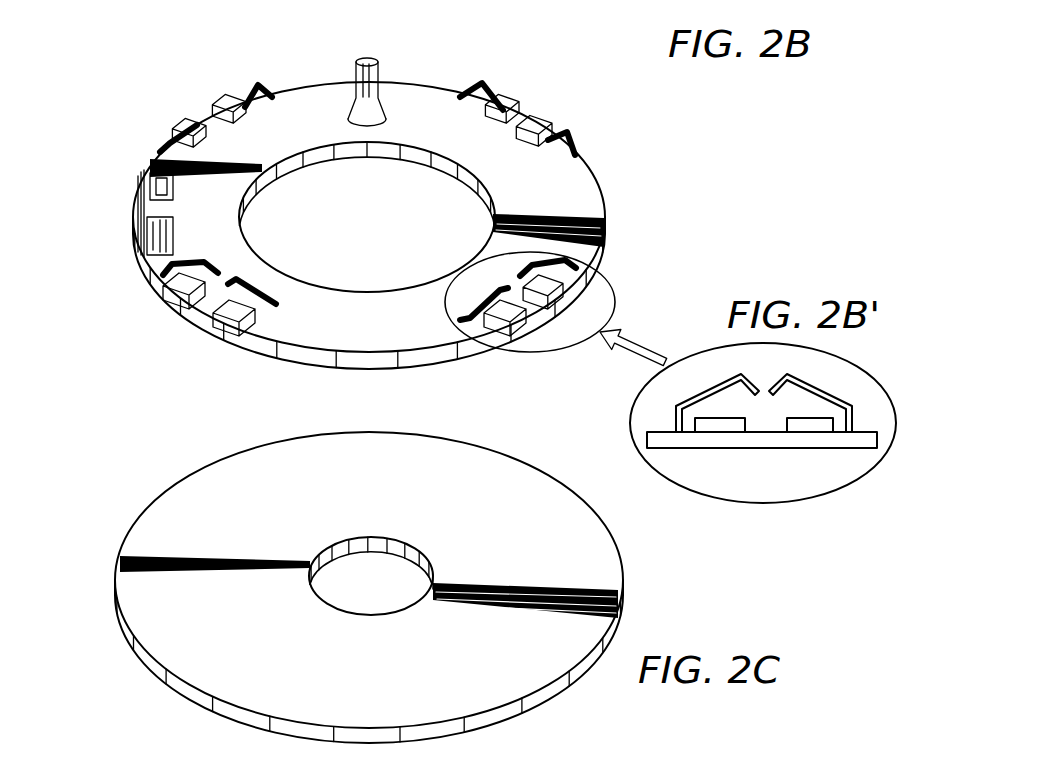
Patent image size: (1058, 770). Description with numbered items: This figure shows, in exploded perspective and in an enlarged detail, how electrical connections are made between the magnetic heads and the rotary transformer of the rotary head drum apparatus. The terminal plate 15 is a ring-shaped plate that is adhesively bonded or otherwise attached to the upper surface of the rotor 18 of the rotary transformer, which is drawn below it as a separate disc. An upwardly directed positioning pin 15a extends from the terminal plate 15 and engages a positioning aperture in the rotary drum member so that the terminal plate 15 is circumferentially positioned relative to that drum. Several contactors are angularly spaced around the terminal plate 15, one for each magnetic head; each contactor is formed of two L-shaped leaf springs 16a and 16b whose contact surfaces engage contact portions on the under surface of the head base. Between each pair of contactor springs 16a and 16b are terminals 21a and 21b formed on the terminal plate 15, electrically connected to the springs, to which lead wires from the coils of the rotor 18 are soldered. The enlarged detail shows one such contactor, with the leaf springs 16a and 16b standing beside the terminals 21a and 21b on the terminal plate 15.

In FIG. 2B, the terminal plate 15 is at (594, 218).
In FIG. 2B', the terminal plate 15 is at (795, 444).
In FIG. 2B, the positioning pin 15a is at (373, 60).
In FIG. 2B, the leaf spring 16a is at (163, 135).
In FIG. 2B', the leaf spring 16a is at (814, 390).
In FIG. 2B, the leaf spring 16b is at (257, 83).
In FIG. 2B', the leaf spring 16b is at (724, 392).
In FIG. 2B, the terminal 21a is at (186, 114).
In FIG. 2B', the terminal 21a is at (818, 427).
In FIG. 2B, the terminal 21b is at (217, 100).
In FIG. 2B', the terminal 21b is at (735, 430).
In FIG. 2C, the rotor 18 is at (165, 503).